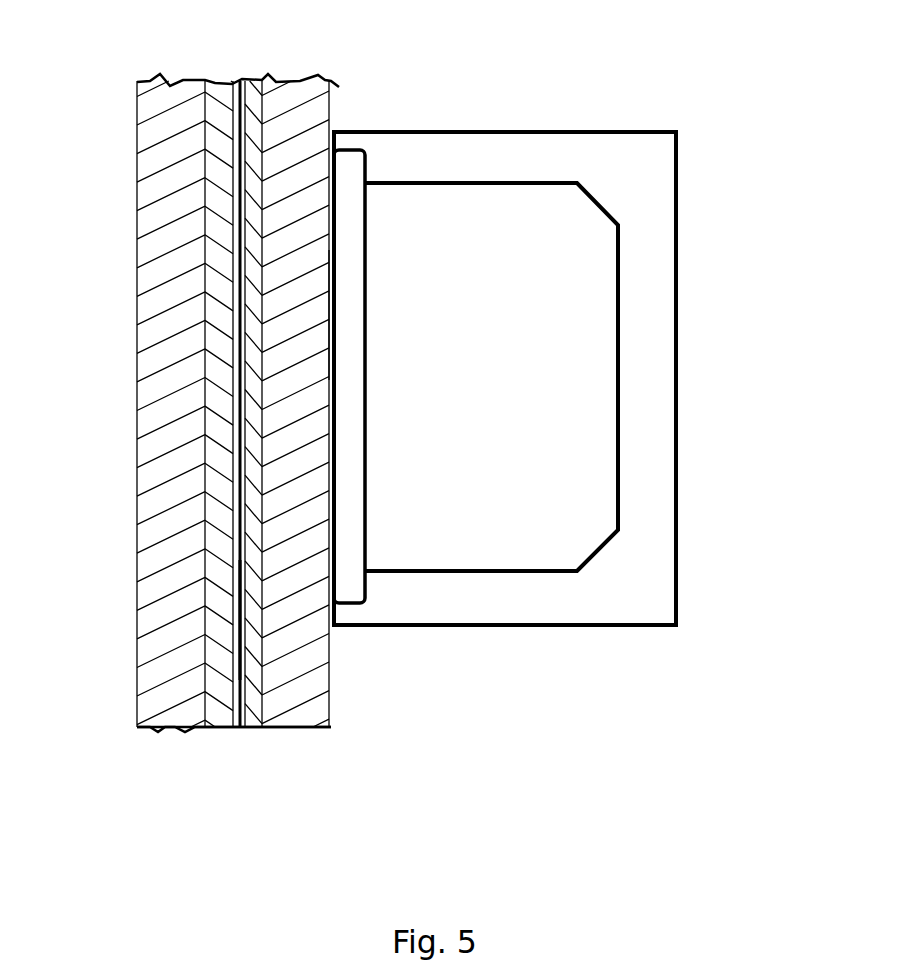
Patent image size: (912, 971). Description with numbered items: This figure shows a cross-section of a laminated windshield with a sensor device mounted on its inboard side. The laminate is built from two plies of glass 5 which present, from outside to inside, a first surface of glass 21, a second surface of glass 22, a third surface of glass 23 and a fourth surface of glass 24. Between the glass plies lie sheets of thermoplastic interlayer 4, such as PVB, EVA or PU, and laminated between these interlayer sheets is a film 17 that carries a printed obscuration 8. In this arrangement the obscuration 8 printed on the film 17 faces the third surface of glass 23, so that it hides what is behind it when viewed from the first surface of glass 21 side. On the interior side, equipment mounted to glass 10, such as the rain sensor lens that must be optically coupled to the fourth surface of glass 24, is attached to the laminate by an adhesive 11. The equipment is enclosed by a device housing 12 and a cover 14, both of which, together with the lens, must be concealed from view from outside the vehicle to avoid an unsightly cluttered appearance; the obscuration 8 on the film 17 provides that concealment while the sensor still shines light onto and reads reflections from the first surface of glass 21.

The thermoplastic interlayer 4 is at (245, 730).
The glass 5 is at (172, 730).
The obscuration 8 is at (249, 624).
The equipment mounted to glass 10 is at (369, 599).
The adhesive 11 is at (327, 315).
The device housing 12 is at (622, 541).
The cover 14 is at (681, 373).
The film 17 is at (232, 82).
The first surface of glass 21 is at (135, 157).
The second surface of glass 22 is at (203, 98).
The third surface of glass 23 is at (264, 100).
The fourth surface of glass 24 is at (336, 723).